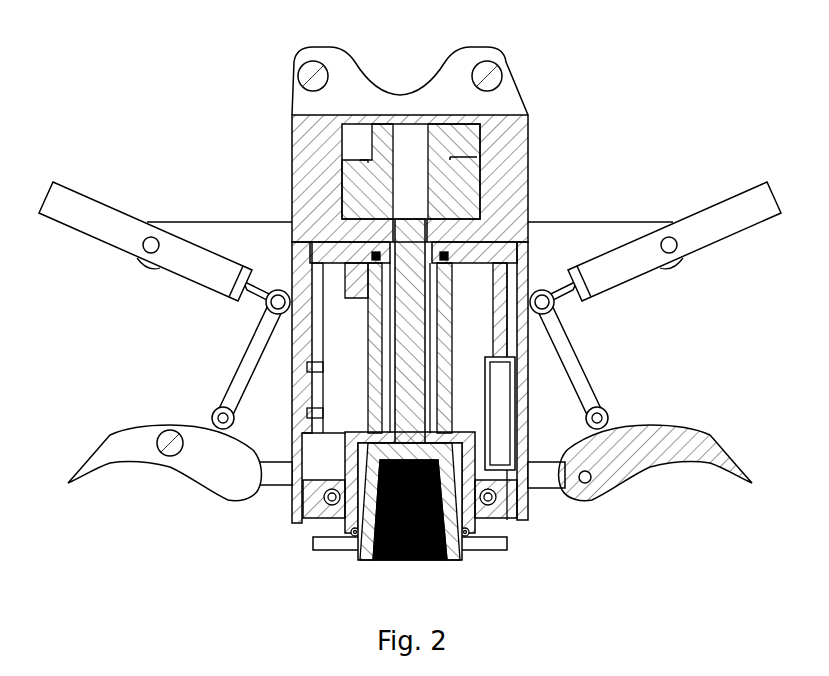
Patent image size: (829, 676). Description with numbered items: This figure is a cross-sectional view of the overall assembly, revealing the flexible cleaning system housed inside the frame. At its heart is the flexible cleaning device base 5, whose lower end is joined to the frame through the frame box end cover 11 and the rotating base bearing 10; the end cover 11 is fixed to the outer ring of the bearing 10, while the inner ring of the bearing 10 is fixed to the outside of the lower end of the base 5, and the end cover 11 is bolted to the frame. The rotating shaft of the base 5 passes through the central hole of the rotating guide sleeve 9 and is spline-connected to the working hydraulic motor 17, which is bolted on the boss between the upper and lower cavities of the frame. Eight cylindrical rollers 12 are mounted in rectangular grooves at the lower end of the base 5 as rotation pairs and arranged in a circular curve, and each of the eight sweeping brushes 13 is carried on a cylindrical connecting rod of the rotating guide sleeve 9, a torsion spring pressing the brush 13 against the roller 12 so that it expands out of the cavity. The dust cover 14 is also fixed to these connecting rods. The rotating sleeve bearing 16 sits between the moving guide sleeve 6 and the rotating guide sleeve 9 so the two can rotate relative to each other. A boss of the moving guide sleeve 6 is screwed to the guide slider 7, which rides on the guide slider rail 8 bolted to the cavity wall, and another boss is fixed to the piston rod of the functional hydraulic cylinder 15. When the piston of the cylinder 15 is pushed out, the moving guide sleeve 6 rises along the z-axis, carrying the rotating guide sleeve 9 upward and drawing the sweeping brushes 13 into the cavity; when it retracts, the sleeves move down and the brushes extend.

The flexible cleaning device base 5 is at (407, 235).
The moving guide sleeve 6 is at (358, 257).
The guide slider 7 is at (337, 268).
The guide slider rail 8 is at (245, 302).
The rotating guide sleeve 9 is at (318, 314).
The rotating base bearing 10 is at (330, 492).
The frame box end cover 11 is at (307, 517).
The cylindrical roller 12 is at (478, 537).
The sweeping brush 13 is at (448, 482).
The dust cover 14 is at (432, 450).
The functional hydraulic cylinder 15 is at (507, 370).
The rotating sleeve bearing 16 is at (460, 250).
The working hydraulic motor 17 is at (460, 187).